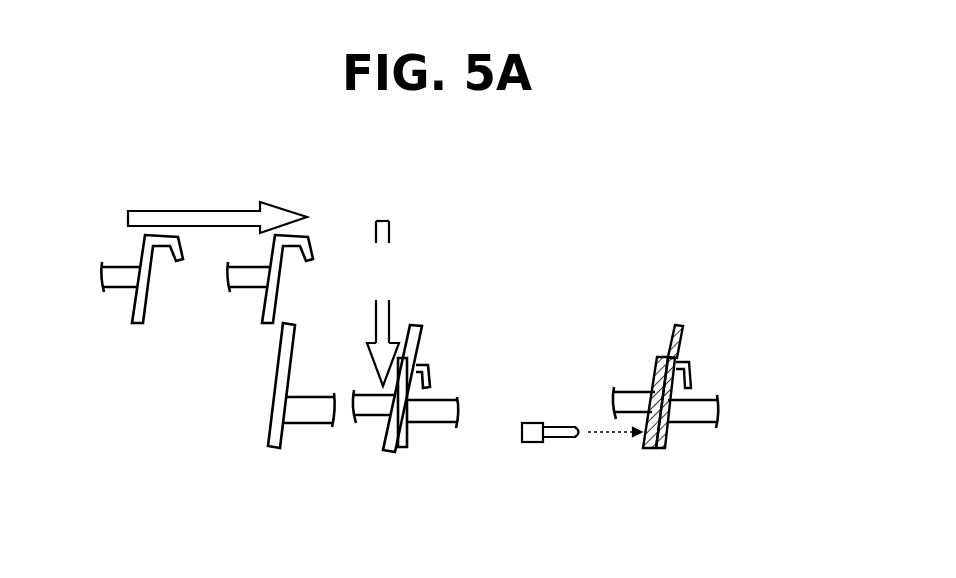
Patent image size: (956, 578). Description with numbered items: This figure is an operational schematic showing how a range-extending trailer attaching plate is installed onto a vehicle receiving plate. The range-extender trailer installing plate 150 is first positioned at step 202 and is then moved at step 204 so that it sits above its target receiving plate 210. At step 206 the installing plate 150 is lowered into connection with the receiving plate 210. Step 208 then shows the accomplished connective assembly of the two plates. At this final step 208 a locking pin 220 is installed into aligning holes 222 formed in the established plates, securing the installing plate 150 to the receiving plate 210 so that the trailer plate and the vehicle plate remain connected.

The range-extender trailer installing plate 150 is at (260, 305).
The step 202 is at (199, 229).
The step 204 is at (187, 283).
The step 206 is at (398, 336).
The step 208 is at (667, 410).
The receiving plate 210 is at (283, 387).
The locking pin 220 is at (532, 432).
The aligning holes 222 is at (642, 437).